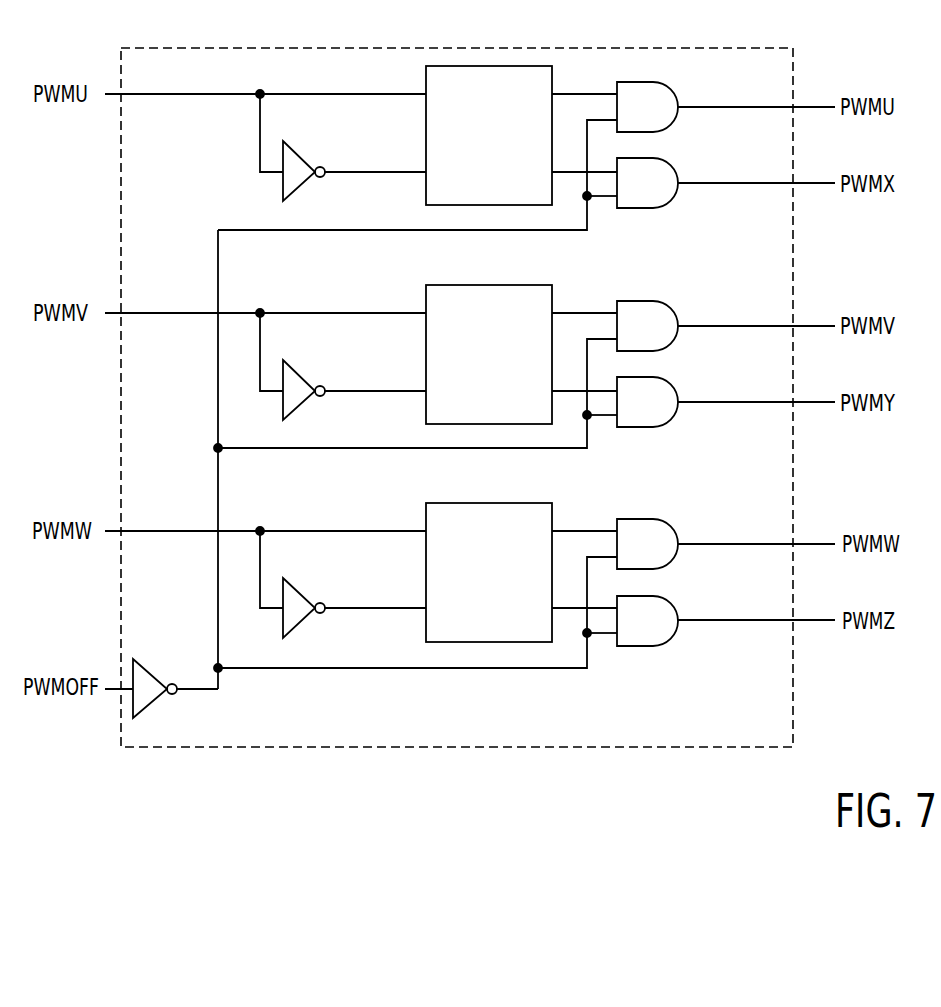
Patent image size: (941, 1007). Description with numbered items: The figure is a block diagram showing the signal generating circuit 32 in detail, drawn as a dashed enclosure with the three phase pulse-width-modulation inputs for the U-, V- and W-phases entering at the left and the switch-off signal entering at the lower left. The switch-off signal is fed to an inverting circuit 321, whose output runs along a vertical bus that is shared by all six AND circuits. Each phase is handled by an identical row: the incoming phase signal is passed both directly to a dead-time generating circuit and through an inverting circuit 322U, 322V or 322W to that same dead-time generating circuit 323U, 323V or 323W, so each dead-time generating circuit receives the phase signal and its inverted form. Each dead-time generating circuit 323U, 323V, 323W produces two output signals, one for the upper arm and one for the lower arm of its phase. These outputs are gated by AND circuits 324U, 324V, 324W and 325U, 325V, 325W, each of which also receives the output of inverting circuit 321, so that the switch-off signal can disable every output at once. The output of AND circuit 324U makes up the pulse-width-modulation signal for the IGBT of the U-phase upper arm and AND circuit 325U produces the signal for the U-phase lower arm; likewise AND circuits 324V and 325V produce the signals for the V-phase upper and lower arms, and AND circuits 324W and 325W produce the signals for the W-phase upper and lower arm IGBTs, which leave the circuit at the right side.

The signal generating circuit 32 is at (168, 60).
The inverting circuit 321 is at (146, 680).
The inverting circuit 322U is at (290, 180).
The inverting circuit 322V is at (290, 399).
The inverting circuit 322W is at (290, 616).
The dead-time generating circuit 323U is at (432, 153).
The dead-time generating circuit 323V is at (432, 372).
The dead-time generating circuit 323W is at (432, 590).
The AND circuit 324U is at (667, 103).
The AND circuit 324V is at (667, 322).
The AND circuit 324W is at (667, 540).
The AND circuit 325U is at (667, 179).
The AND circuit 325V is at (667, 398).
The AND circuit 325W is at (667, 616).